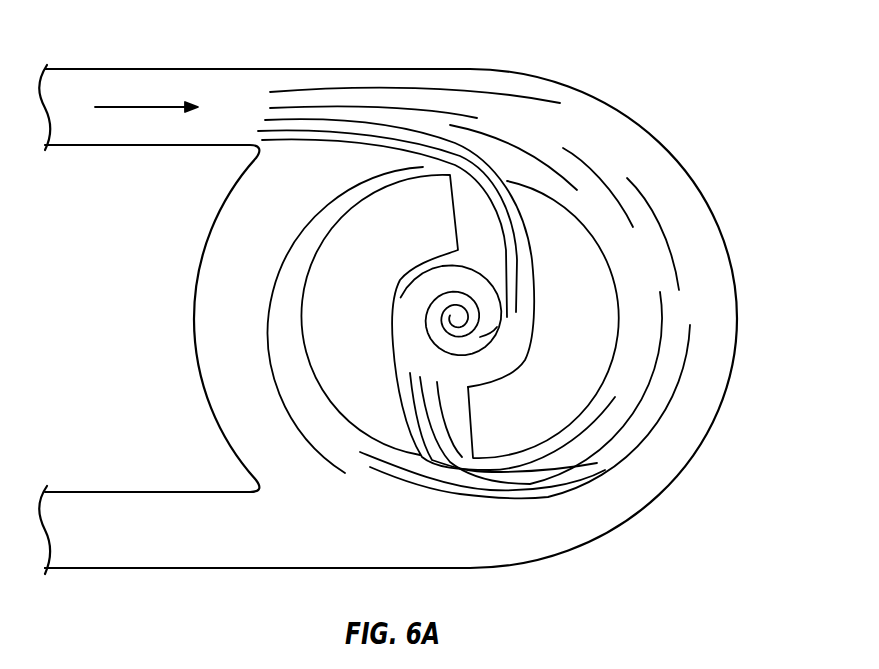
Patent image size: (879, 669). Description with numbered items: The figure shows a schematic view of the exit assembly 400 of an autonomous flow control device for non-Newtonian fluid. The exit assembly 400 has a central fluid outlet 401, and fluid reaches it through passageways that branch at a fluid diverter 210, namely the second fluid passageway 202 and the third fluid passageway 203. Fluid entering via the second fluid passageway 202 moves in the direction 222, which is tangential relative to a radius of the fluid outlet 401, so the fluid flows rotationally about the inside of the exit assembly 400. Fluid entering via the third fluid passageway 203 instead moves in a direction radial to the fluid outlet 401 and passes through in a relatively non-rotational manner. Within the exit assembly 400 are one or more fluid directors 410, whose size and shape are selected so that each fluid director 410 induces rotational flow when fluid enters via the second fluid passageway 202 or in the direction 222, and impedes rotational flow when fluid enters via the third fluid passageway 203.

The exit assembly 400 is at (711, 75).
The second fluid passageway 202 is at (212, 125).
The third fluid passageway 203 is at (108, 558).
The direction 222 is at (130, 107).
The fluid diverter 210 is at (144, 324).
The fluid director 410 is at (378, 276).
The fluid outlet 401 is at (455, 320).